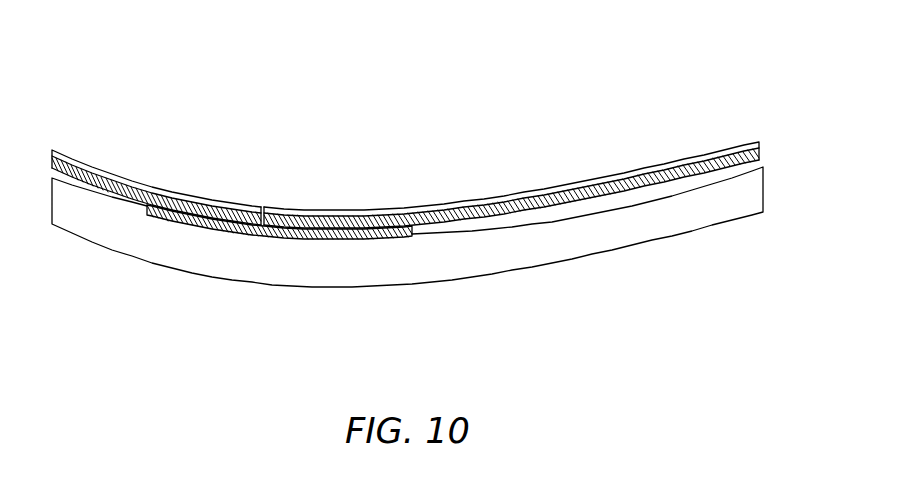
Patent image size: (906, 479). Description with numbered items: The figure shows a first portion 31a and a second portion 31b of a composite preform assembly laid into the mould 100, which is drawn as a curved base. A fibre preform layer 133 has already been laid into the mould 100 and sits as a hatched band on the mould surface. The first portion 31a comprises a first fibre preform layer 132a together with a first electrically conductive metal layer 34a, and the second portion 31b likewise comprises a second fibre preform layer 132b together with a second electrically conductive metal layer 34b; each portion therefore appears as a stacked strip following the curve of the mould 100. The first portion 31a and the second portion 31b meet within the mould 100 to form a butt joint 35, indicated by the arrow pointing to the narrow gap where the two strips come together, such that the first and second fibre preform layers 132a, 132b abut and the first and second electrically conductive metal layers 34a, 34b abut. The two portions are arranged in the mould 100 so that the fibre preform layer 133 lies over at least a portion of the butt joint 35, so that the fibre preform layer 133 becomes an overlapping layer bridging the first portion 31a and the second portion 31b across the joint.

The mould 100 is at (171, 240).
The fibre preform layer 133 is at (398, 243).
The first fibre preform layer 132a is at (123, 185).
The second fibre preform layer 132b is at (690, 159).
The first portion 31a is at (237, 205).
The second portion 31b is at (330, 212).
The first electrically conductive metal layer 34a is at (192, 198).
The second electrically conductive metal layer 34b is at (572, 186).
The butt joint 35 is at (258, 182).